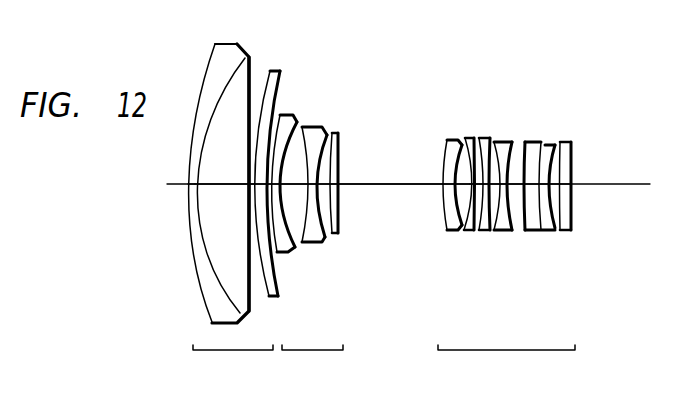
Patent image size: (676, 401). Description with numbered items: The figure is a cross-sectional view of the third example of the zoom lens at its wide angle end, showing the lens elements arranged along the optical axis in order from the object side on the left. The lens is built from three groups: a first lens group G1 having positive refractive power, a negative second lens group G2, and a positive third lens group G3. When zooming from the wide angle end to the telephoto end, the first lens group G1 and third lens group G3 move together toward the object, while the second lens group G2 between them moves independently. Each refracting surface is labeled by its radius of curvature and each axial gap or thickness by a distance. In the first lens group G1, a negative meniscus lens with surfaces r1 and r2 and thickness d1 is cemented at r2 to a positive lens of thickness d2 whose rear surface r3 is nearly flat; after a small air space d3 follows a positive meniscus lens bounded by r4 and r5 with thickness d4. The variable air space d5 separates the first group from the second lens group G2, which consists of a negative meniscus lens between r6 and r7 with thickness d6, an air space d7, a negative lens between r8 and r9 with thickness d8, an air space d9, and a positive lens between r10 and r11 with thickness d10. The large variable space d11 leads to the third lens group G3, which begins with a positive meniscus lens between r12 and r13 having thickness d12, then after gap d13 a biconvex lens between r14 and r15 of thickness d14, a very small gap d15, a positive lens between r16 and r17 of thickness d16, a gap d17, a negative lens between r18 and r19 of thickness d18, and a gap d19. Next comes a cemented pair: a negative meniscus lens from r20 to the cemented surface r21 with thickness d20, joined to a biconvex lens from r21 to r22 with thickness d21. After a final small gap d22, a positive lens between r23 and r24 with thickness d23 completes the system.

The radius of curvature of first lens surface r1 is at (212, 61).
The radius of curvature of second lens surface r2 is at (233, 68).
The radius of curvature of third lens surface r3 is at (251, 74).
The radius of curvature of fourth lens surface r4 is at (269, 76).
The radius of curvature of fifth lens surface r5 is at (282, 76).
The radius of curvature of sixth lens surface r6 is at (281, 114).
The radius of curvature of seventh lens surface r7 is at (295, 119).
The radius of curvature of eighth lens surface r8 is at (307, 127).
The radius of curvature of ninth lens surface r9 is at (326, 133).
The radius of curvature of tenth lens surface r10 is at (335, 136).
The radius of curvature of eleventh lens surface r11 is at (343, 137).
The radius of curvature of twelfth lens surface r12 is at (448, 142).
The radius of curvature of thirteenth lens surface r13 is at (457, 141).
The radius of curvature of fourteenth lens surface r14 is at (467, 138).
The radius of curvature of fifteenth lens surface r15 is at (475, 137).
The radius of curvature of sixteenth lens surface r16 is at (480, 137).
The radius of curvature of seventeenth lens surface r17 is at (490, 137).
The radius of curvature of eighteenth lens surface r18 is at (499, 141).
The radius of curvature of nineteenth lens surface r19 is at (512, 141).
The radius of curvature of twentieth lens surface r20 is at (528, 141).
The radius of curvature of twenty-first lens surface r21 is at (545, 141).
The radius of curvature of twenty-second lens surface r22 is at (557, 143).
The radius of curvature of twenty-third lens surface r23 is at (563, 146).
The radius of curvature of twenty-fourth lens surface r24 is at (574, 160).
The first axial distance d1 is at (193, 186).
The second axial distance d2 is at (216, 188).
The third axial distance d3 is at (252, 188).
The fourth axial distance d4 is at (262, 188).
The fifth axial distance d5 is at (271, 188).
The sixth axial distance d6 is at (277, 188).
The seventh axial distance d7 is at (303, 190).
The eighth axial distance d8 is at (322, 232).
The ninth axial distance d9 is at (328, 211).
The tenth axial distance d10 is at (341, 196).
The eleventh axial distance d11 is at (397, 186).
The twelfth axial distance d12 is at (453, 190).
The thirteenth axial distance d13 is at (464, 198).
The fourteenth axial distance d14 is at (468, 225).
The fifteenth axial distance d15 is at (476, 228).
The sixteenth axial distance d16 is at (482, 230).
The seventeenth axial distance d17 is at (485, 230).
The eighteenth axial distance d18 is at (500, 230).
The nineteenth axial distance d19 is at (517, 230).
The twentieth axial distance d20 is at (533, 230).
The twenty-first axial distance d21 is at (566, 220).
The twenty-second axial distance d22 is at (559, 215).
The twenty-third axial distance d23 is at (568, 201).
The first lens group G1 is at (233, 363).
The second lens group G2 is at (312, 363).
The third lens group G3 is at (506, 363).